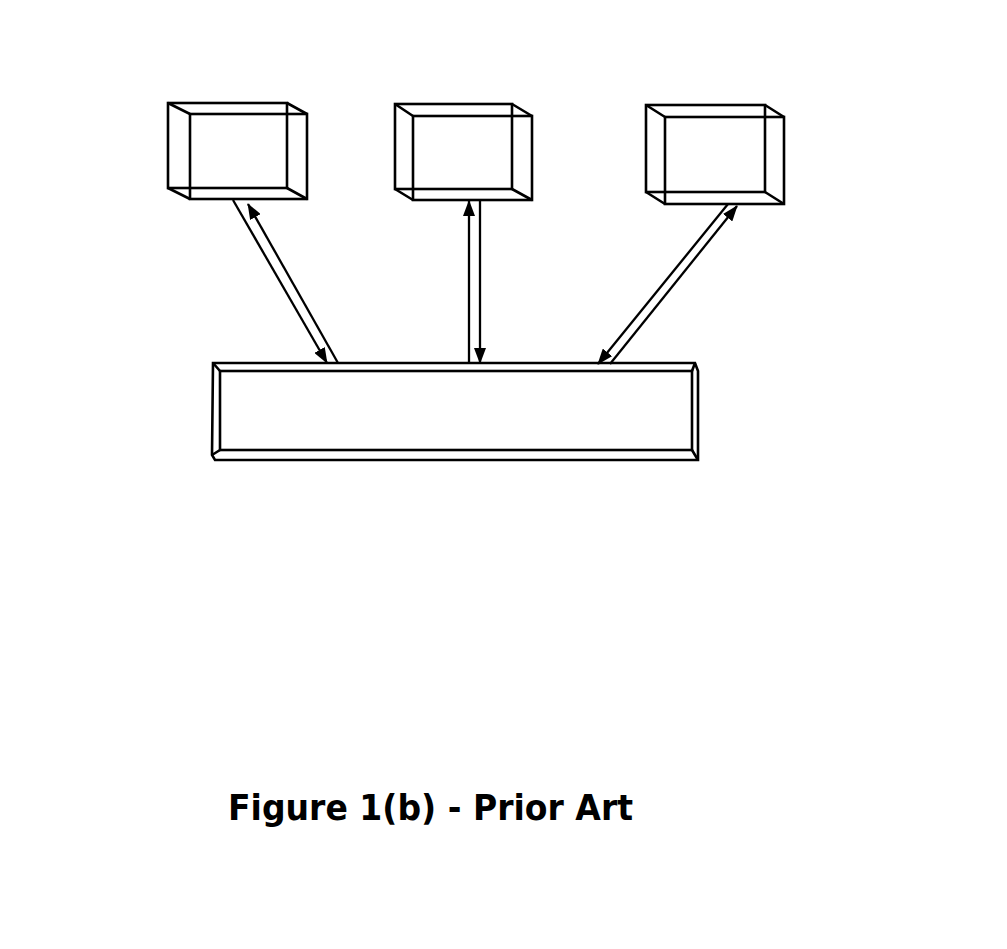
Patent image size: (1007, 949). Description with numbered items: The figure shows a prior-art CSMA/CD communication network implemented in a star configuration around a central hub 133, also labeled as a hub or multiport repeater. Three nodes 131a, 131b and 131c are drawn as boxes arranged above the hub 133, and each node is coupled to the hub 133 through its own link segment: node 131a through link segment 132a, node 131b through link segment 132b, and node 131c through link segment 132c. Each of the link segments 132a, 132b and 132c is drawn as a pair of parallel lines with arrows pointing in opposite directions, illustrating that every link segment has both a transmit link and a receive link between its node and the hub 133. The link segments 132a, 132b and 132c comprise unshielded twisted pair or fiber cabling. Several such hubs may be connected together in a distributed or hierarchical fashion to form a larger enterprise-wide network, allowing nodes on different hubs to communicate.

The node 131a is at (155, 155).
The node 131b is at (393, 128).
The node 131c is at (642, 130).
The link segment 132a is at (250, 275).
The link segment 132b is at (455, 295).
The link segment 132c is at (693, 268).
The hub 133 is at (477, 470).